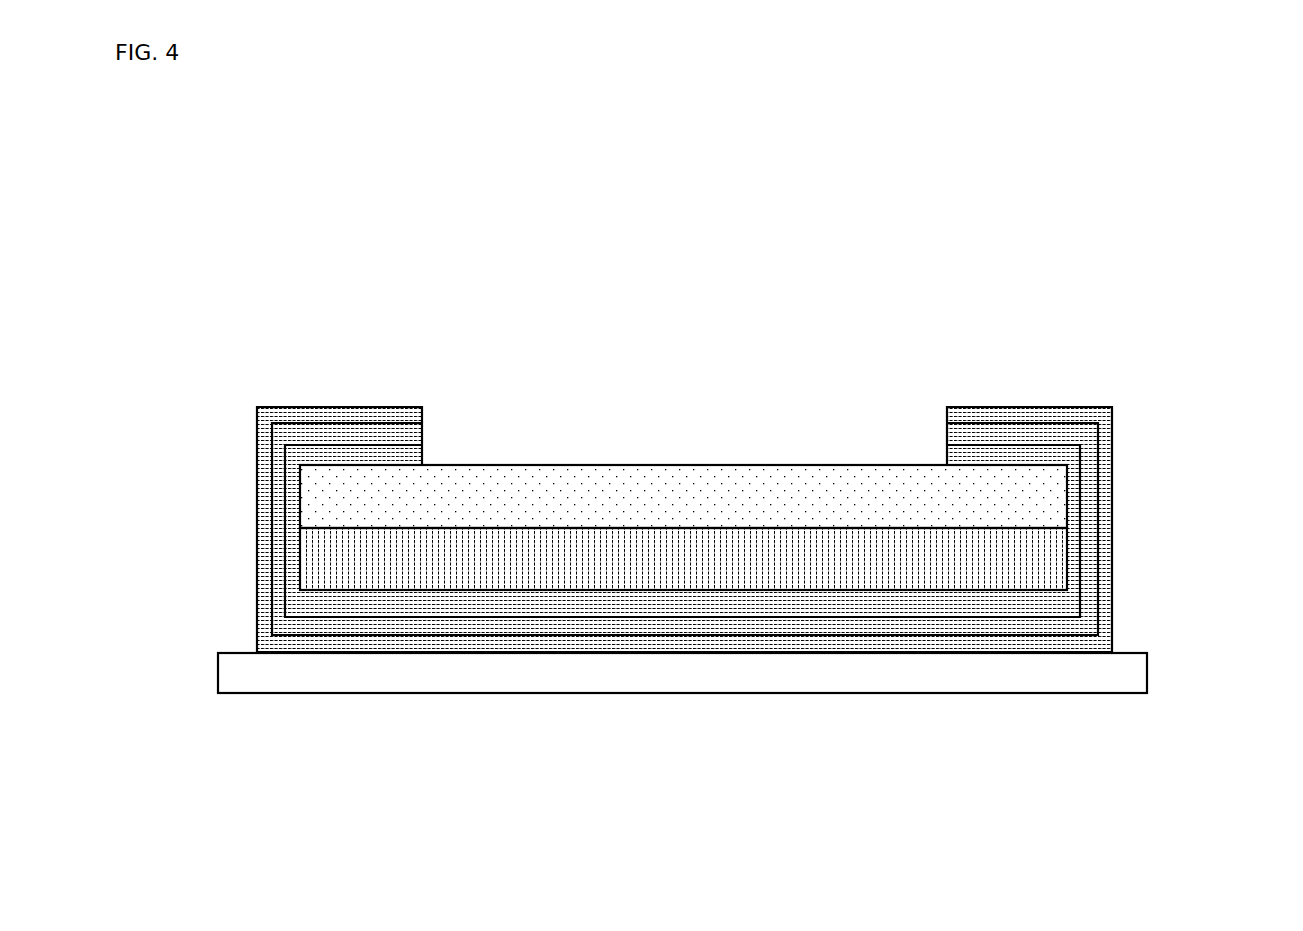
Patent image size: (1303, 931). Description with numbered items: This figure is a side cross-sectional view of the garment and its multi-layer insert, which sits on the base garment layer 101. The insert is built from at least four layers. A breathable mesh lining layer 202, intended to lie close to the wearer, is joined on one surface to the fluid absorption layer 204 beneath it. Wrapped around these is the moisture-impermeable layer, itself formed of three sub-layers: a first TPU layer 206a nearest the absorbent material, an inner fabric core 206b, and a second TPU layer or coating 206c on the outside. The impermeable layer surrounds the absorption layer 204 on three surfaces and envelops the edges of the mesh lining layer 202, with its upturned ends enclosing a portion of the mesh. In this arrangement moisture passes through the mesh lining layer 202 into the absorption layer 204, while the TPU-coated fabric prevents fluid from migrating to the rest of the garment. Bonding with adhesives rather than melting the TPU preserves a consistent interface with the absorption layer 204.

The base garment layer 101 is at (661, 719).
The mesh lining layer 202 is at (545, 486).
The fluid absorption layer 204 is at (707, 546).
The first TPU layer 206a is at (1062, 451).
The inner fabric core 206b is at (1092, 578).
The second TPU layer or coating 206c is at (255, 430).